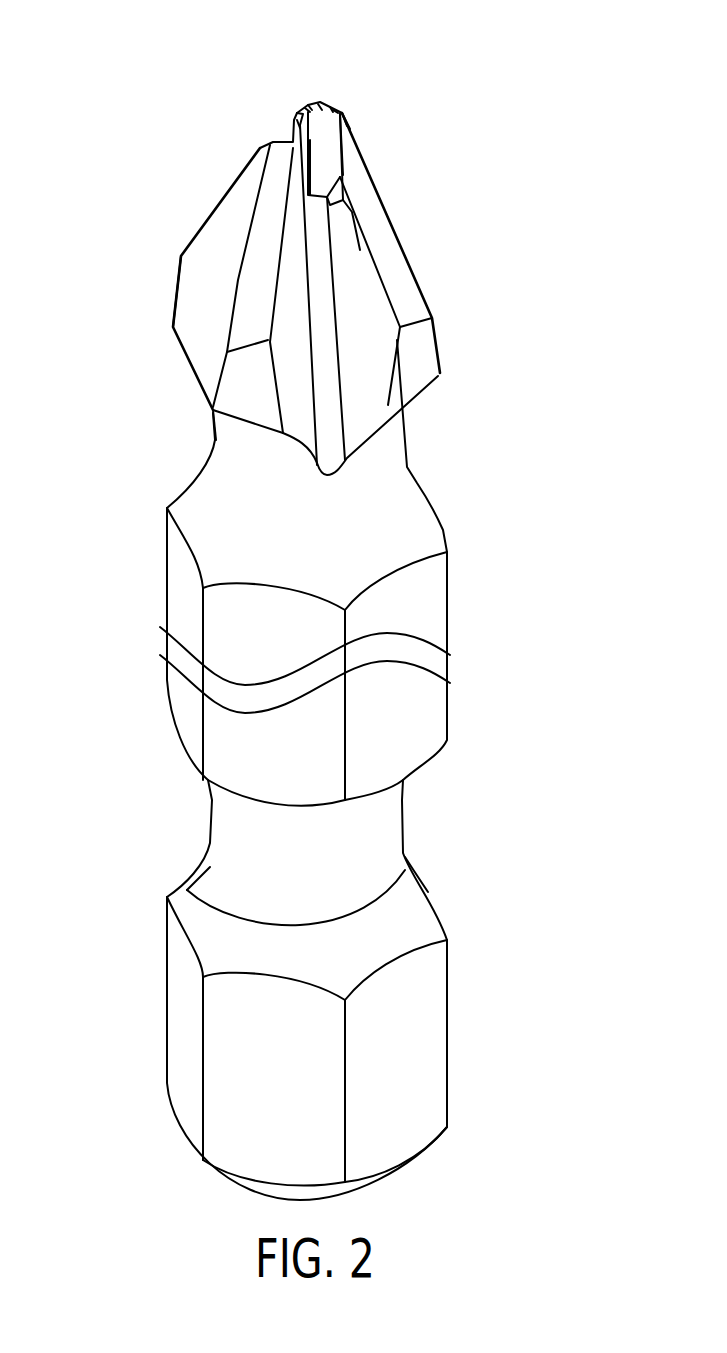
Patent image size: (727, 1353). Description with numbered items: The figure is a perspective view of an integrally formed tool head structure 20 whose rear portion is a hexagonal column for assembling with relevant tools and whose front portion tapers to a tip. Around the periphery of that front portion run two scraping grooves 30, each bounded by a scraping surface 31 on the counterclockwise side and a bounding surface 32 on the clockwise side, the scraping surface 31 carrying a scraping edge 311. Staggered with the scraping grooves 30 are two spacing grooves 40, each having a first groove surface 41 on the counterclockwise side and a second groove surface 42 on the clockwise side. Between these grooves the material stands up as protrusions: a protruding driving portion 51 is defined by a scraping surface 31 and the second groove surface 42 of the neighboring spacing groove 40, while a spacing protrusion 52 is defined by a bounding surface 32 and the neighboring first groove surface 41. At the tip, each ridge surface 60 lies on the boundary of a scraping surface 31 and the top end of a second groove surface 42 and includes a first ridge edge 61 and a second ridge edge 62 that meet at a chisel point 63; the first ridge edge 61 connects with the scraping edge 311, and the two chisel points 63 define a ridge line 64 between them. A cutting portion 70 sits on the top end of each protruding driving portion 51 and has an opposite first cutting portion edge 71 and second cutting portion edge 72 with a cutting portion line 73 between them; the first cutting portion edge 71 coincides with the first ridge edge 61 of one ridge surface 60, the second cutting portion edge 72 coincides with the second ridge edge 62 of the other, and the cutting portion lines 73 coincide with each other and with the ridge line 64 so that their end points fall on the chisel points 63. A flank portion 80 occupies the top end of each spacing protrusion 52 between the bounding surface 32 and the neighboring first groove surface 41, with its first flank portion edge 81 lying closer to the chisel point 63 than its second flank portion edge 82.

The tool head structure 20 is at (445, 828).
The scraping groove 30 is at (368, 368).
The scraping surface 31 is at (210, 470).
The scraping edge 311 is at (280, 247).
The bounding surface 32 is at (363, 337).
The spacing groove 40 is at (192, 294).
The first groove surface 41 is at (212, 258).
The second groove surface 42 is at (266, 208).
The protruding driving portion 51 is at (249, 301).
The spacing protrusion 52 is at (407, 298).
The ridge surface 60 is at (268, 156).
The first ridge edge 61 is at (333, 110).
The first cutting portion edge 71 is at (416, 94).
The second ridge edge 62 is at (320, 110).
The second cutting portion edge 72 is at (222, 90).
The chisel point 63 is at (347, 126).
The ridge line 64 is at (305, 108).
The cutting portion line 73 is at (302, 70).
The cutting portion 70 is at (303, 114).
The flank portion 80 is at (342, 173).
The first flank portion edge 81 is at (350, 129).
The second flank portion edge 82 is at (352, 212).